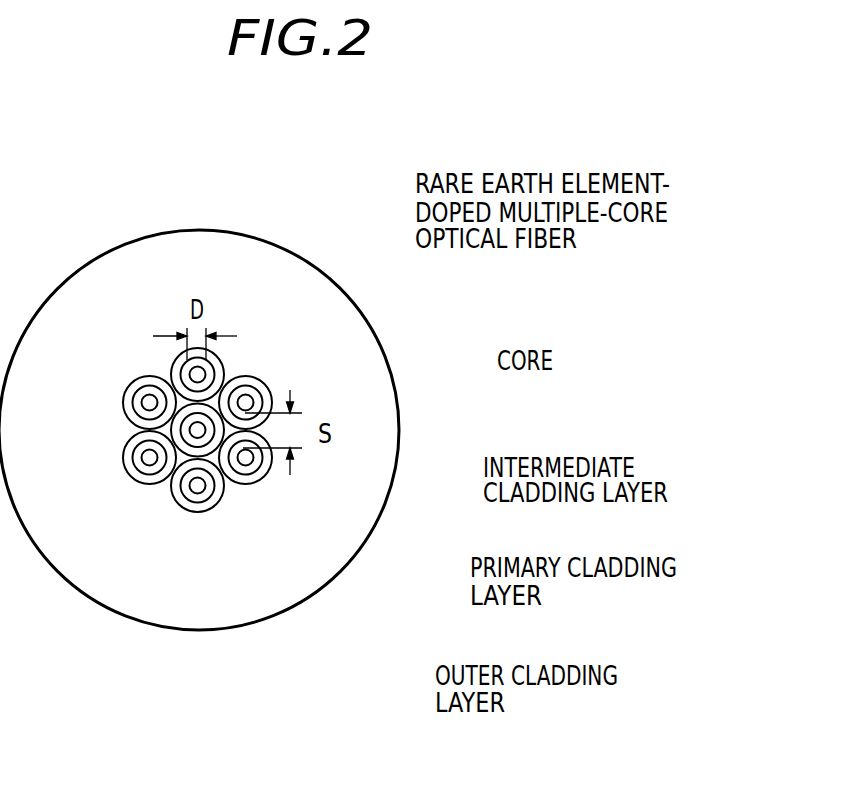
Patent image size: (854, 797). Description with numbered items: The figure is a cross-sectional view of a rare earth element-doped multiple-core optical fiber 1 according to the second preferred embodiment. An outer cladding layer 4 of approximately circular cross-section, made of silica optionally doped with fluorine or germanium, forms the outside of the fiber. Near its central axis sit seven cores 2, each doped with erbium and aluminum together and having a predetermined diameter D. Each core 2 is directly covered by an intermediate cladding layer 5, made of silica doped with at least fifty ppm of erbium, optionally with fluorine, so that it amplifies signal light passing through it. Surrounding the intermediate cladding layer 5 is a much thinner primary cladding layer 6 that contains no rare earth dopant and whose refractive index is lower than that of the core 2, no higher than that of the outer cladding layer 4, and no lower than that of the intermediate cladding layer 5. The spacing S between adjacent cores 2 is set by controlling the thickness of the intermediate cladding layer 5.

The rare earth element-doped multiple-core optical fiber 1 is at (242, 430).
The core 2 is at (245, 403).
The outer cladding layer 4 is at (272, 585).
The intermediate cladding layer 5 is at (257, 471).
The primary cladding layer 6 is at (254, 482).